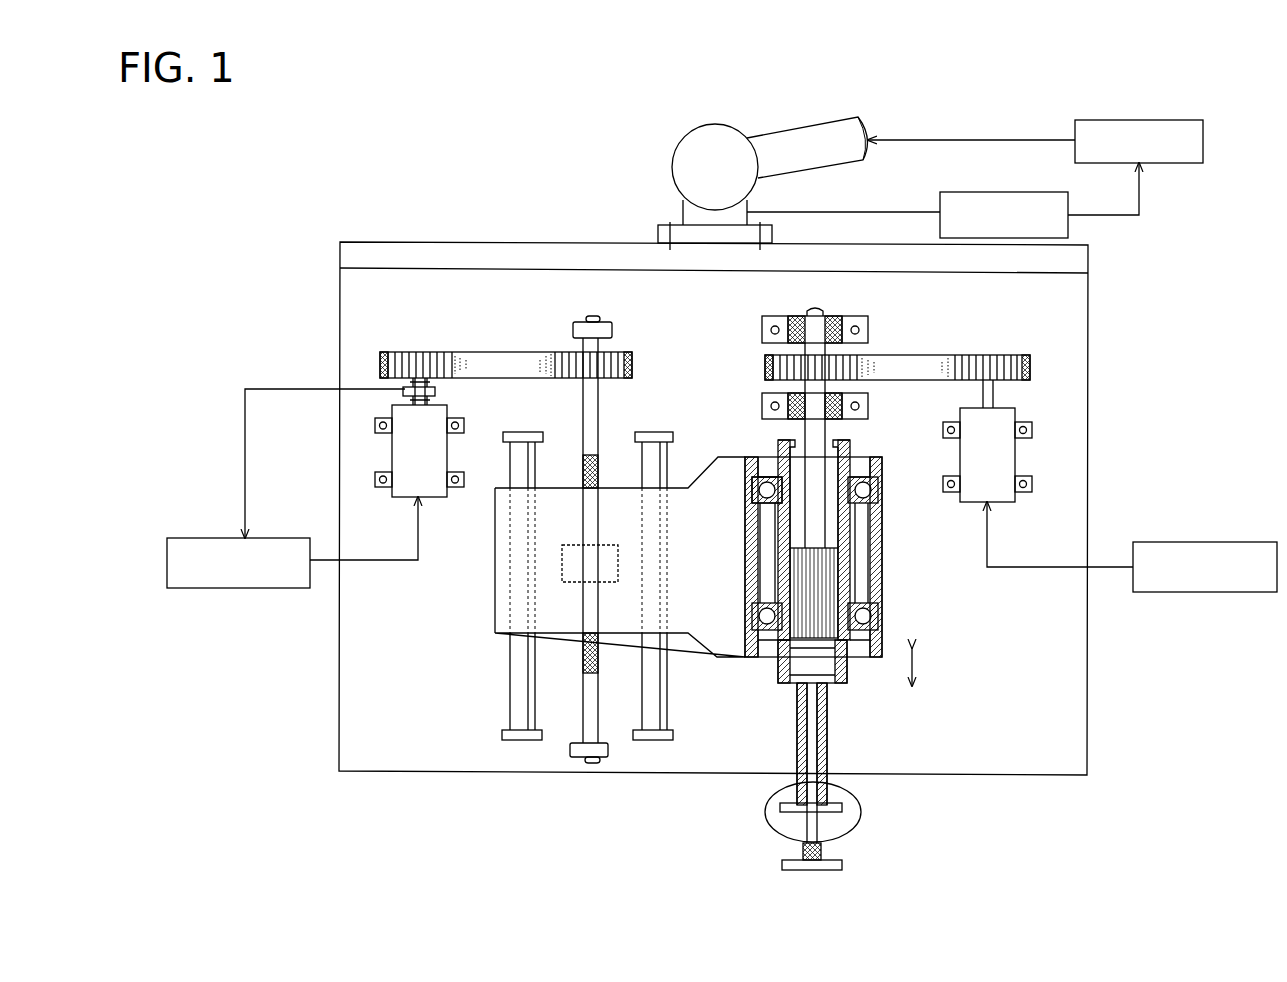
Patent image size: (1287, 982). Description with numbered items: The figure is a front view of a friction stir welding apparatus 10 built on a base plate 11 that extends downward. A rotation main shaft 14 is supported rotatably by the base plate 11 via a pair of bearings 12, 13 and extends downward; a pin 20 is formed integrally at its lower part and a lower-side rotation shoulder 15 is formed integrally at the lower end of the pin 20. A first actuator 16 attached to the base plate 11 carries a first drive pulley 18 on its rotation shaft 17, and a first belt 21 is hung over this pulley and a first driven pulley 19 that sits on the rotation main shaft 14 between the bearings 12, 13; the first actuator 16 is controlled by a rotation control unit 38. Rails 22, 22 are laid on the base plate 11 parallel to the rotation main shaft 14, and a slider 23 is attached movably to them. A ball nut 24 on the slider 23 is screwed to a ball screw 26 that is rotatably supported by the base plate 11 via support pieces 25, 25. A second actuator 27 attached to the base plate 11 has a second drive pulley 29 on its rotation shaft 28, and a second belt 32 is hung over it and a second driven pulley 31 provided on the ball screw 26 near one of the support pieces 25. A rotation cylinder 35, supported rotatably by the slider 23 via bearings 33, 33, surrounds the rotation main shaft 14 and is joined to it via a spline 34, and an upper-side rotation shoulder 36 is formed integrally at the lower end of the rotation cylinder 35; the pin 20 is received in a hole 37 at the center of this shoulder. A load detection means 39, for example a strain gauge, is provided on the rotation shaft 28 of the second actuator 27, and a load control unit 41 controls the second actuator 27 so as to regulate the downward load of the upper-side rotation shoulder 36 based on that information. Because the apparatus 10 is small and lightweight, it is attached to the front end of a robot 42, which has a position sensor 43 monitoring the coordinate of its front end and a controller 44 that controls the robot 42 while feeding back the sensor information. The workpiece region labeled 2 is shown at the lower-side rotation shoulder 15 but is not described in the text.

The test piece assembly 2 is at (767, 822).
The friction stir welding apparatus 10 is at (312, 195).
The base plate 11 is at (1072, 306).
The bearing 12 is at (790, 320).
The bearing 13 is at (790, 395).
The rotation main shaft 14 is at (802, 425).
The lower-side rotation shoulder 15 is at (842, 865).
The first actuator 16 is at (1003, 456).
The rotation shaft 17 is at (992, 393).
The first drive pulley 18 is at (985, 365).
The first driven pulley 19 is at (880, 362).
The pin 20 is at (817, 830).
The first belt 21 is at (920, 365).
The rails 22 is at (513, 688).
The slider 23 is at (688, 603).
The ball nut 24 is at (562, 560).
The support pieces 25 is at (605, 322).
The ball screw 26 is at (583, 402).
The second actuator 27 is at (400, 452).
The rotation shaft 28 is at (395, 401).
The second drive pulley 29 is at (425, 352).
The second driven pulley 31 is at (575, 355).
The second belt 32 is at (503, 360).
The bearings 33 is at (880, 493).
The spline 34 is at (835, 575).
The rotation cylinder 35 is at (850, 547).
The upper-side rotation shoulder 36 is at (842, 808).
The hole 37 is at (827, 727).
The rotation control unit 38 is at (1197, 594).
The load detection means 39 is at (405, 389).
The load control unit 41 is at (242, 590).
The robot 42 is at (800, 146).
The position sensor 43 is at (1000, 192).
The controller 44 is at (1205, 141).